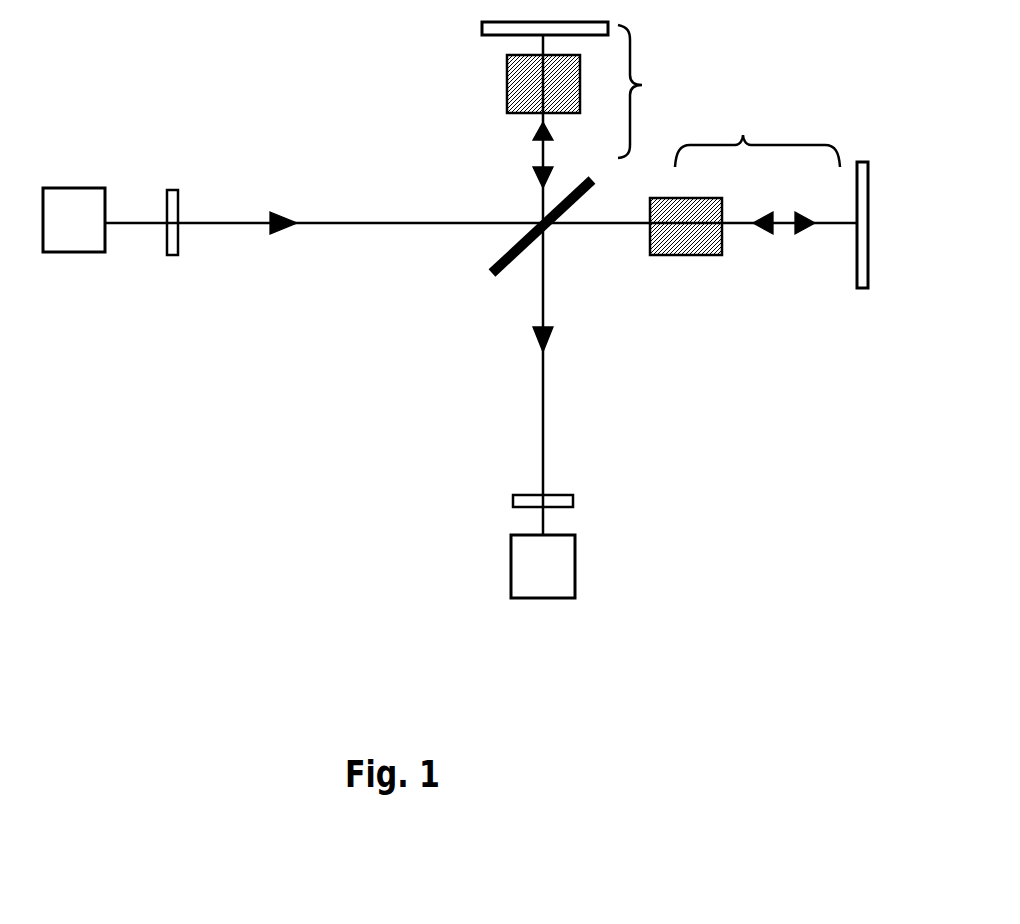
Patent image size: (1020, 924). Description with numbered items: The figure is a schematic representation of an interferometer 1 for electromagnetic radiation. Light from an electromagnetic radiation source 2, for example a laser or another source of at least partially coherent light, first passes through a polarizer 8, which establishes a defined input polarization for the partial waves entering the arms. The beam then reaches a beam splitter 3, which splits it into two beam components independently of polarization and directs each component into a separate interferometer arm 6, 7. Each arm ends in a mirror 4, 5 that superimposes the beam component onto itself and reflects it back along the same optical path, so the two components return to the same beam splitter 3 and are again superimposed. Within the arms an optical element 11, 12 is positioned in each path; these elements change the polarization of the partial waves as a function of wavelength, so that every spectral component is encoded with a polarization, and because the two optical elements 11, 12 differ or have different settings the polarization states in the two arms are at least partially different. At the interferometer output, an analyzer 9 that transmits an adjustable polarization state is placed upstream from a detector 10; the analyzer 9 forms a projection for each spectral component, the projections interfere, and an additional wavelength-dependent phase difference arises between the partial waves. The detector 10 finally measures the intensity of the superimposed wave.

The interferometer 1 is at (765, 418).
The electromagnetic radiation source 2 is at (87, 258).
The beam splitter 3 is at (495, 278).
The reference mirror 4 is at (473, 33).
The measurement mirror 5 is at (860, 160).
The interferometer arm 6 is at (520, 83).
The interferometer arm 7 is at (745, 214).
The polarizer 8 is at (175, 265).
The analyzer 9 is at (508, 502).
The detector 10 is at (575, 580).
The optical element 11 is at (503, 97).
The optical element 12 is at (682, 257).